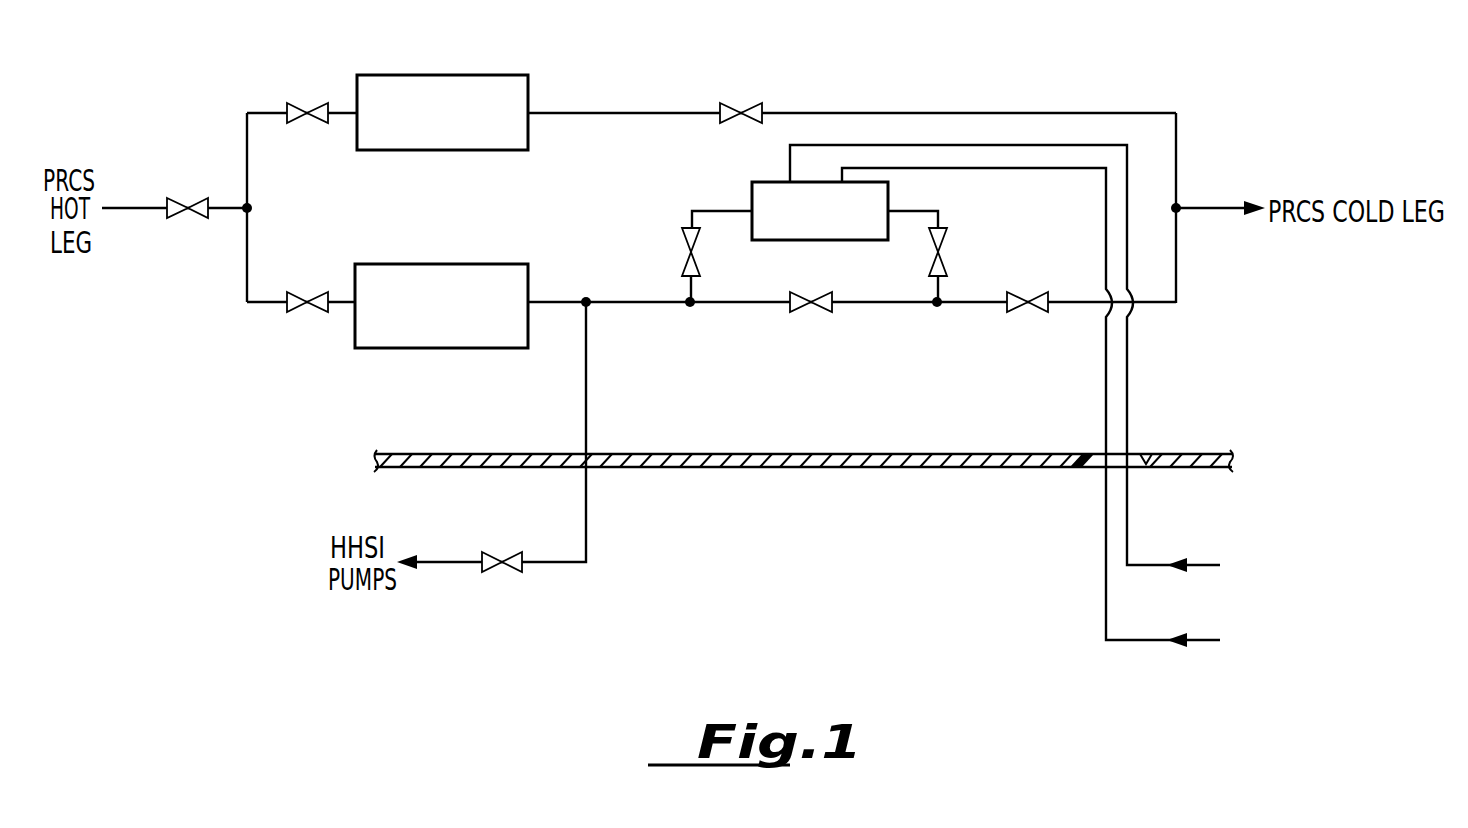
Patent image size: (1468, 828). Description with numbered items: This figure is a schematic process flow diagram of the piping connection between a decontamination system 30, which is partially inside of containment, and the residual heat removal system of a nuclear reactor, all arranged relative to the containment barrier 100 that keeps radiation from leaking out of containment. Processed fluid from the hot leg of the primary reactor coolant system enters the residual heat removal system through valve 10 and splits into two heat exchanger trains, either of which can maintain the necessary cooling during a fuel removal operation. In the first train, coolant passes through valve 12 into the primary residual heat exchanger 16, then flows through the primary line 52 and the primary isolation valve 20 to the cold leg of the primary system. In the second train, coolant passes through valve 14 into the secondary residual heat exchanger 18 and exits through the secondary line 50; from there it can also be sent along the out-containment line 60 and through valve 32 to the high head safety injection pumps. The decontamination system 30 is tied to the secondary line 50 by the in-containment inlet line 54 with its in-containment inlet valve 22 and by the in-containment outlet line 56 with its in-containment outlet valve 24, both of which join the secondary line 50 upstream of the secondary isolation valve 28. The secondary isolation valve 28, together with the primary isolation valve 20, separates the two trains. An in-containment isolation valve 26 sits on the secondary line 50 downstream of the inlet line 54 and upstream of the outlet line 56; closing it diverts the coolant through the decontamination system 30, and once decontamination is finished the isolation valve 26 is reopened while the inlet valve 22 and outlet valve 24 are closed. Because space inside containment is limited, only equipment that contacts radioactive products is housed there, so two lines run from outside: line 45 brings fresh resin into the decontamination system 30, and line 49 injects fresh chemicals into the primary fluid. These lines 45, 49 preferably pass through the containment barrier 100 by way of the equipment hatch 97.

The valve 10 is at (203, 200).
The valve 12 is at (312, 104).
The valve 14 is at (315, 306).
The primary residual heat exchanger 16 is at (469, 86).
The secondary residual heat exchanger 18 is at (480, 268).
The primary isolation valve 20 is at (734, 106).
The in-containment inlet valve 22 is at (684, 251).
The in-containment outlet valve 24 is at (942, 258).
The in-containment isolation valve 26 is at (823, 308).
The secondary isolation valve 28 is at (1034, 307).
The decontamination system 30 is at (771, 193).
The valve 32 is at (515, 570).
The line 45 is at (1200, 563).
The line 49 is at (1207, 645).
The secondary line 50 is at (901, 304).
The primary line 52 is at (962, 111).
The in-containment inlet line 54 is at (708, 210).
The in-containment outlet line 56 is at (921, 211).
The out-containment line 60 is at (587, 412).
The equipment hatch 97 is at (1143, 453).
The containment barrier 100 is at (893, 462).